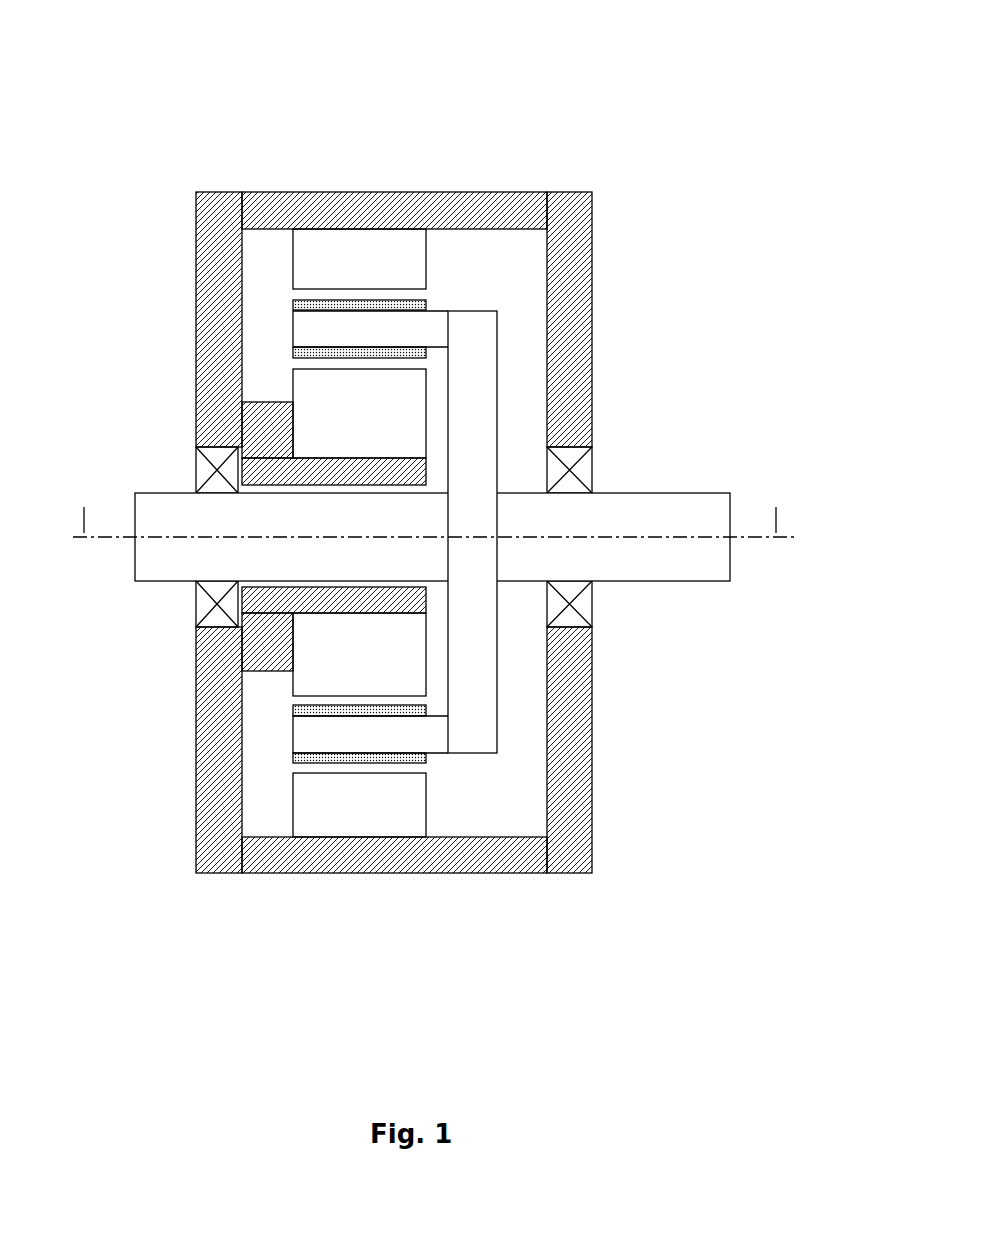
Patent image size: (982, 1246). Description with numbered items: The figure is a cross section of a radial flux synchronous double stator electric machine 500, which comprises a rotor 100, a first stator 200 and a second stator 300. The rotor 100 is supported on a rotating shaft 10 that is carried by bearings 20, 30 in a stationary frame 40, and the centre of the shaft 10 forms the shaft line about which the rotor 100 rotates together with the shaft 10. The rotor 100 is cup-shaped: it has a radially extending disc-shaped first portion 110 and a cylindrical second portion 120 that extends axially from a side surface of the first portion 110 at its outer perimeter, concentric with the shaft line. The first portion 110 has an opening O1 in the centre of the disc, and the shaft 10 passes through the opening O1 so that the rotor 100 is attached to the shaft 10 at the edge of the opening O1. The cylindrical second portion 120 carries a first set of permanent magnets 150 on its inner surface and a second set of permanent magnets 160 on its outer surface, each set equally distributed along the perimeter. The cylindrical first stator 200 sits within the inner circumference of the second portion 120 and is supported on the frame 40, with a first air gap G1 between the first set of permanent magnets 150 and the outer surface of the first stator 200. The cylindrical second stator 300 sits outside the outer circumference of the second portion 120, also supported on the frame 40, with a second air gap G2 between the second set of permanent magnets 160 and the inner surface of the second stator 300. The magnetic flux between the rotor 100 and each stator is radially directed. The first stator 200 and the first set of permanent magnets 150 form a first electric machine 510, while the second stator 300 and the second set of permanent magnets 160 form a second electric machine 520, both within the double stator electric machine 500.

The synchronous double stator electric machine 500 is at (297, 97).
The stationary frame 40 is at (556, 202).
The bearing 30 is at (208, 605).
The bearing 20 is at (580, 603).
The rotating shaft 10 is at (688, 497).
The second stator 300 is at (375, 268).
The first stator 200 is at (375, 422).
The rotor 100 is at (440, 312).
The first portion 110 is at (491, 420).
The second portion 120 is at (375, 340).
The first set of permanent magnets 150 is at (293, 713).
The second set of permanent magnets 160 is at (293, 756).
The second air gap G2 is at (283, 297).
The first air gap G1 is at (283, 365).
The opening O1 is at (504, 488).
The first electric machine 510 is at (433, 678).
The second electric machine 520 is at (433, 760).